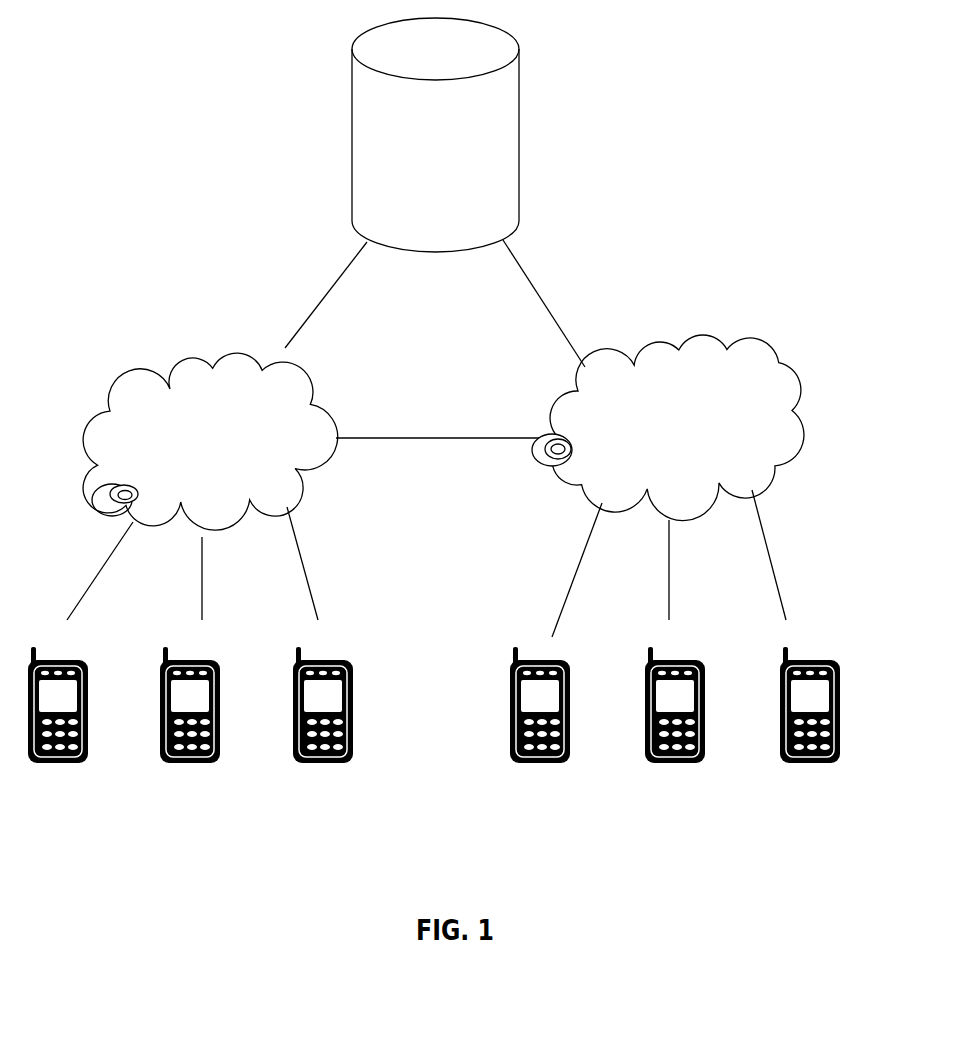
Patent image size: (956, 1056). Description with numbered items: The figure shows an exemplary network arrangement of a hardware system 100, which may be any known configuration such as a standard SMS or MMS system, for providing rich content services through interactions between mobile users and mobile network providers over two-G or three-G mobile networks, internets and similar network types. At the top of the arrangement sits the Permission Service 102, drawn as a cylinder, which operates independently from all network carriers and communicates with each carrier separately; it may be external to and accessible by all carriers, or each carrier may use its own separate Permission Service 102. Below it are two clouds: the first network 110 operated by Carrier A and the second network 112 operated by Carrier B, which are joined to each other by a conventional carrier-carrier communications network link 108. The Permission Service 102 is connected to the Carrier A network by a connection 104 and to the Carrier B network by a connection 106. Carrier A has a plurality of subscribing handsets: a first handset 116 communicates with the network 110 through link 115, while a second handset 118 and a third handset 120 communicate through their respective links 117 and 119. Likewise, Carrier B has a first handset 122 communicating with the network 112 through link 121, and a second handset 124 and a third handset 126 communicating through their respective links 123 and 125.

The hardware system 100 is at (212, 182).
The Permission Service 102 is at (502, 137).
The link between permission service and carrier A network 104 is at (325, 295).
The link between permission service and carrier B network 106 is at (544, 303).
The carrier-carrier communications network link 108 is at (442, 452).
The first network 110 is at (302, 403).
The second network 112 is at (768, 387).
The link 115 is at (91, 571).
The first handset 116 is at (58, 724).
The link 117 is at (226, 578).
The second handset 118 is at (190, 724).
The link 119 is at (319, 563).
The third handset 120 is at (323, 724).
The link 121 is at (568, 570).
The first handset 122 is at (540, 724).
The link 123 is at (693, 570).
The second handset 124 is at (675, 724).
The link 125 is at (785, 555).
The third handset 126 is at (810, 724).